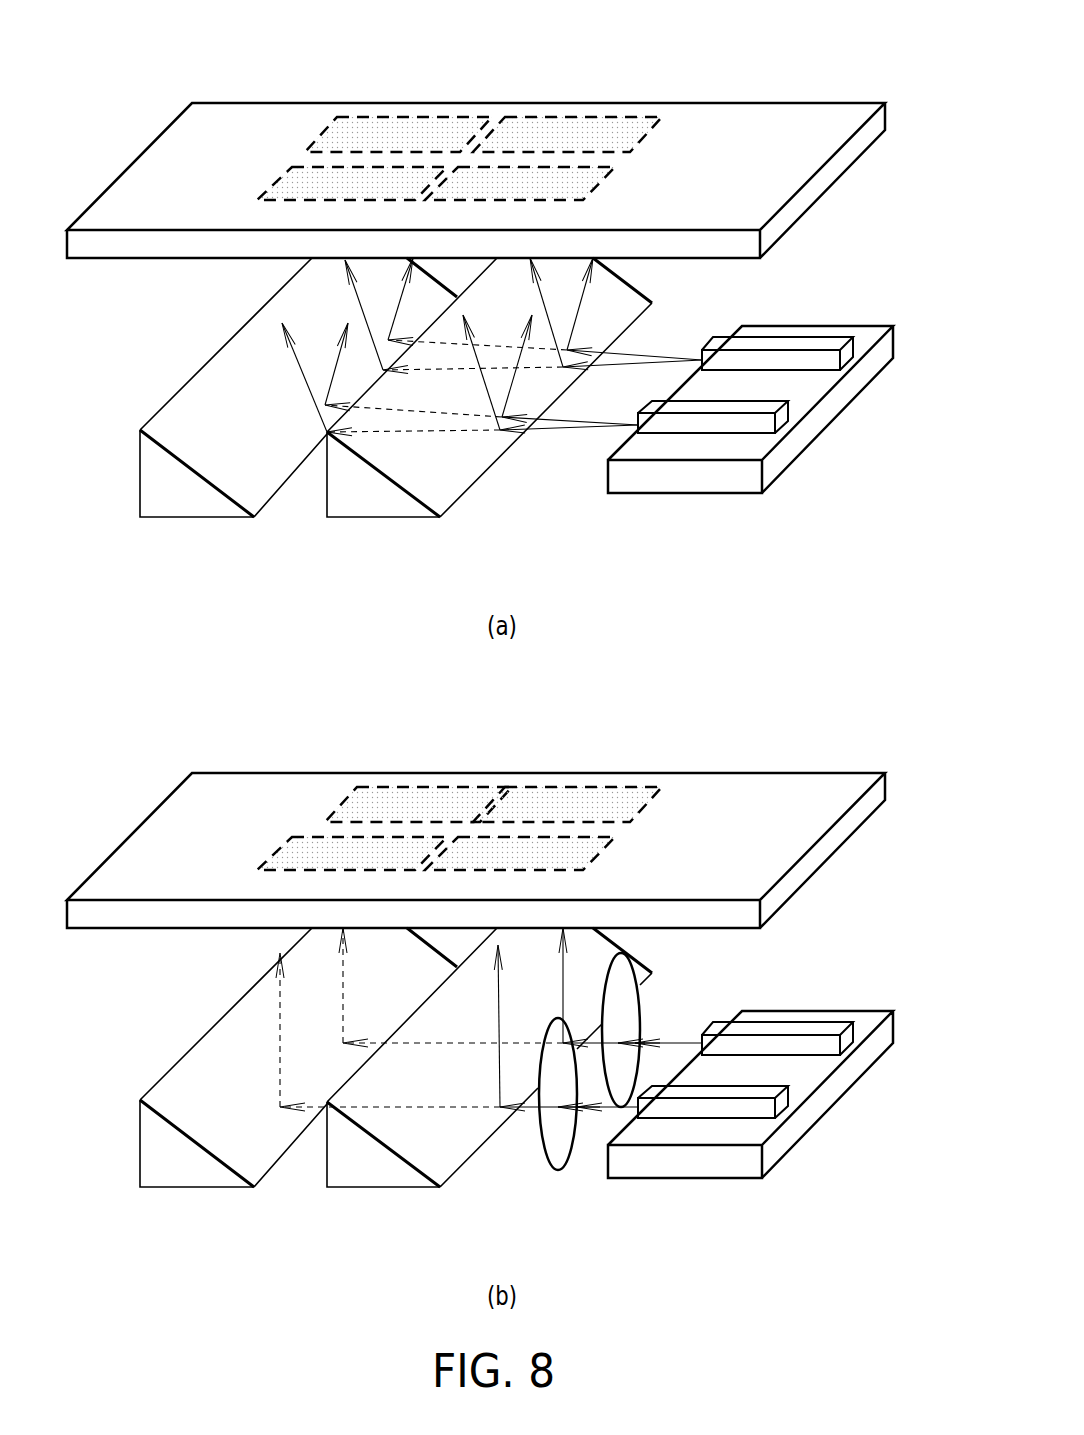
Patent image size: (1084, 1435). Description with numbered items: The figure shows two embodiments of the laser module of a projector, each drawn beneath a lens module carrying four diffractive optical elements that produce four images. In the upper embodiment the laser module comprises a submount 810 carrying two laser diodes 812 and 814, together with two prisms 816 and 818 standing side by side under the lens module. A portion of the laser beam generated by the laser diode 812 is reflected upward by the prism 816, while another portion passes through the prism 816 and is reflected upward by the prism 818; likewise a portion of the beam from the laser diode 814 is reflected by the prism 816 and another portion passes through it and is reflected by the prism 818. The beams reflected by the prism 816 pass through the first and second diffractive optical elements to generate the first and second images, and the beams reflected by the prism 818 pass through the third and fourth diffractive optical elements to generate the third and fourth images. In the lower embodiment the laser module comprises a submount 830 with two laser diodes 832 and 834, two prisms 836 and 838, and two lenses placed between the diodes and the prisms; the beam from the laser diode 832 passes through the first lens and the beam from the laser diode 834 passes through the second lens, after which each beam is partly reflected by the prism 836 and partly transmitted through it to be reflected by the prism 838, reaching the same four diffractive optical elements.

The submount 810 is at (827, 408).
The laser diode 812 is at (690, 428).
The laser diode 814 is at (815, 358).
The prism 816 is at (358, 485).
The prism 818 is at (163, 485).
The submount 830 is at (827, 1092).
The laser diode 832 is at (690, 1112).
The laser diode 834 is at (815, 1042).
The prism 836 is at (358, 1155).
The prism 838 is at (163, 1155).